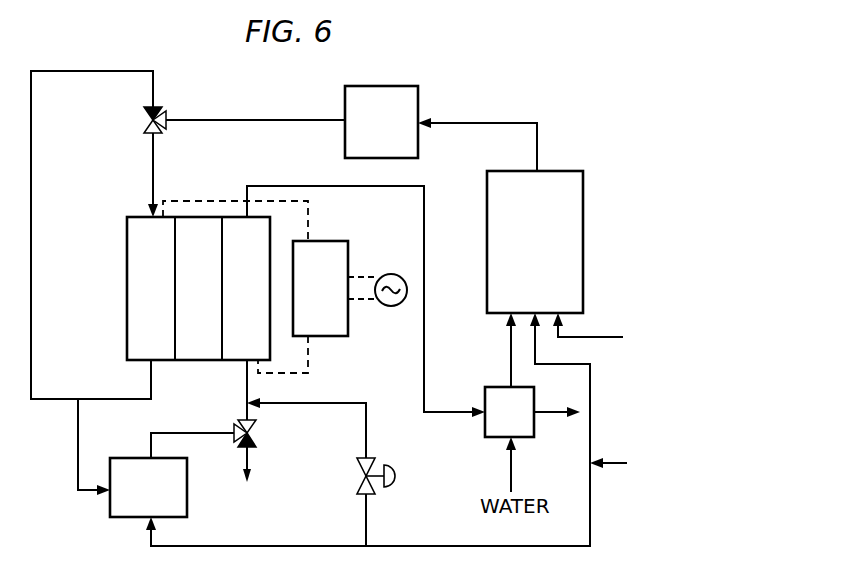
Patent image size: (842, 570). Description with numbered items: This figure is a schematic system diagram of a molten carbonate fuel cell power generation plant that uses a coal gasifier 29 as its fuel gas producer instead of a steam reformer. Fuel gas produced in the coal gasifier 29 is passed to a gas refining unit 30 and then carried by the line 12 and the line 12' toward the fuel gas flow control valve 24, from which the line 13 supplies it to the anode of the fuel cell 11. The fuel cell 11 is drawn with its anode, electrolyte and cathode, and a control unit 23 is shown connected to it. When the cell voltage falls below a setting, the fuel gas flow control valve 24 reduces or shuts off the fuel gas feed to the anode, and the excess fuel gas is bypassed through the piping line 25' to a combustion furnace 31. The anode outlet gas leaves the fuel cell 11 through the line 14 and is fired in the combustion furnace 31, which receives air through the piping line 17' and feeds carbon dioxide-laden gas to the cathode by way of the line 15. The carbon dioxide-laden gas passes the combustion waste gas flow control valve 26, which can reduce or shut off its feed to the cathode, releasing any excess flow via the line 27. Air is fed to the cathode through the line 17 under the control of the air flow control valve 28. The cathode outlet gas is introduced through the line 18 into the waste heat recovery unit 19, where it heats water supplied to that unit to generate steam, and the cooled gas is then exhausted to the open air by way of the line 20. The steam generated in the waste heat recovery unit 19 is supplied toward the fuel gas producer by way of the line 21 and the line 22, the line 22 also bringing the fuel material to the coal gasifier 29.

The fuel cell 11 is at (126, 262).
The line 12 is at (477, 126).
The reformed fuel gas line 12' is at (255, 101).
The line 13 is at (154, 172).
The line 14 is at (78, 456).
The line 15 is at (169, 430).
The line 17 is at (306, 458).
The piping line 17' is at (406, 429).
The line 18 is at (427, 355).
The waste heat recovery unit 19 is at (535, 405).
The line 20 is at (555, 416).
The line 21 is at (511, 353).
The line 22 is at (584, 335).
The control unit 23 is at (336, 243).
The fuel gas flow control valve 24 is at (158, 113).
The piping line 25' is at (92, 235).
The combustion waste gas flow control valve 26 is at (253, 446).
The line 27 is at (251, 474).
The air flow control valve 28 is at (367, 463).
The coal gasifier 29 is at (556, 242).
The gas refining unit 30 is at (417, 108).
The combustion furnace 31 is at (187, 490).